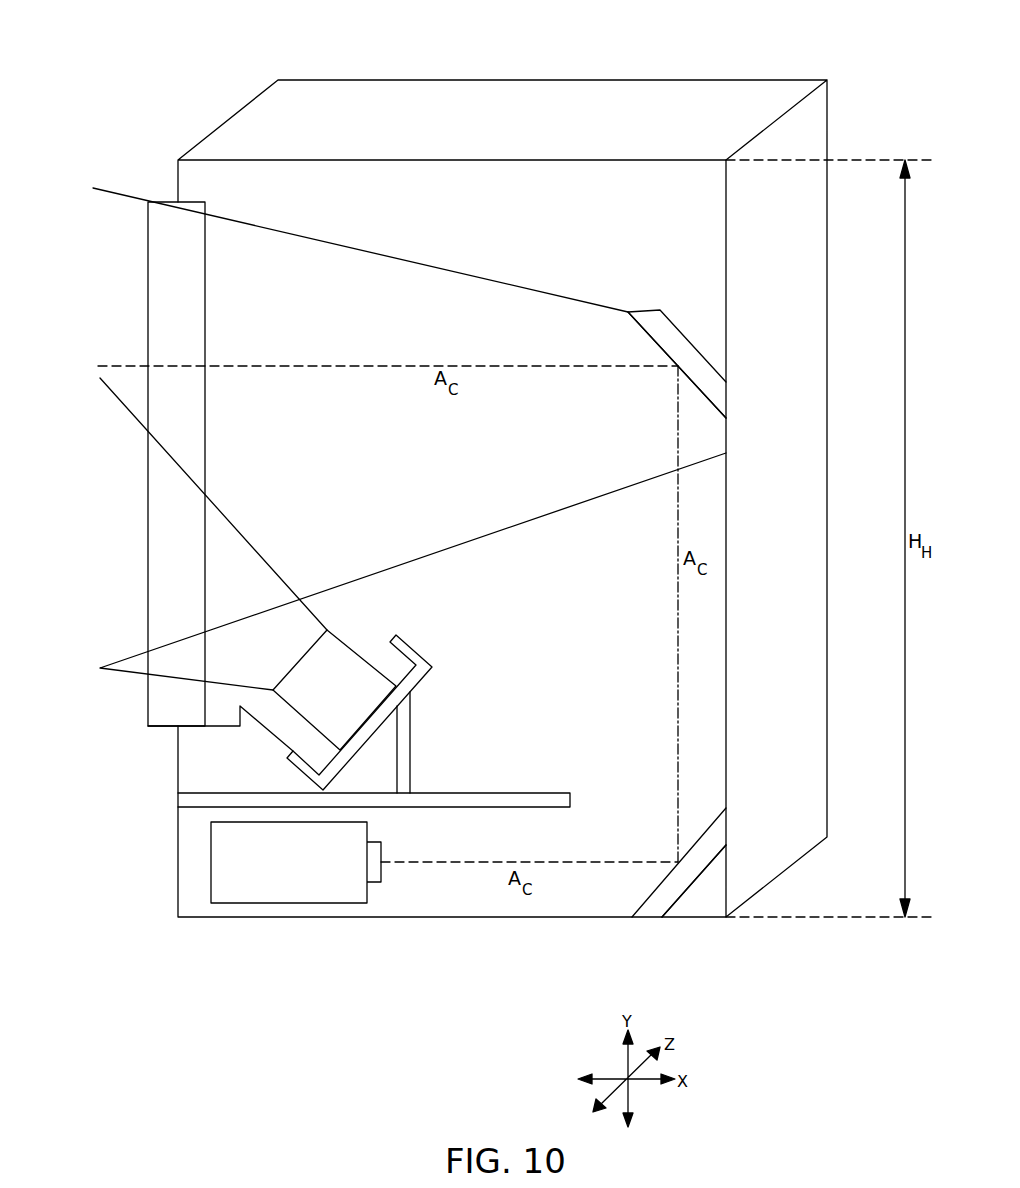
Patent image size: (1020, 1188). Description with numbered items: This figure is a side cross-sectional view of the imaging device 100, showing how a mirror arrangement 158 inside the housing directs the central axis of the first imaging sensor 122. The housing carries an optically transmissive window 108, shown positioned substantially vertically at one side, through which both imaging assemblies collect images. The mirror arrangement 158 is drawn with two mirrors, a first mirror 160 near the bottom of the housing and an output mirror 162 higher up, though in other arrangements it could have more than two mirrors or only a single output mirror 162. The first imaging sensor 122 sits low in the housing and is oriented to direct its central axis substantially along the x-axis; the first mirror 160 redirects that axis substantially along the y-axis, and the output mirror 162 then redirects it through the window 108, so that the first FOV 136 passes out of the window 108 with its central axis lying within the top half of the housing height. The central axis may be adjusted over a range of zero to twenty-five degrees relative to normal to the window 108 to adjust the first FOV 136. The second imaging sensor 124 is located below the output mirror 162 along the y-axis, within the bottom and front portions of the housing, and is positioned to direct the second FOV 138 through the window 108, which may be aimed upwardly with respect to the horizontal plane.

The imaging device 100 is at (626, 108).
The window 108 is at (175, 284).
The first imaging sensor 122 is at (272, 887).
The second imaging sensor 124 is at (310, 675).
The first FOV 136 is at (507, 300).
The second FOV 138 is at (142, 668).
The mirror arrangement 158 is at (700, 343).
The first mirror 160 is at (675, 887).
The output mirror 162 is at (715, 387).